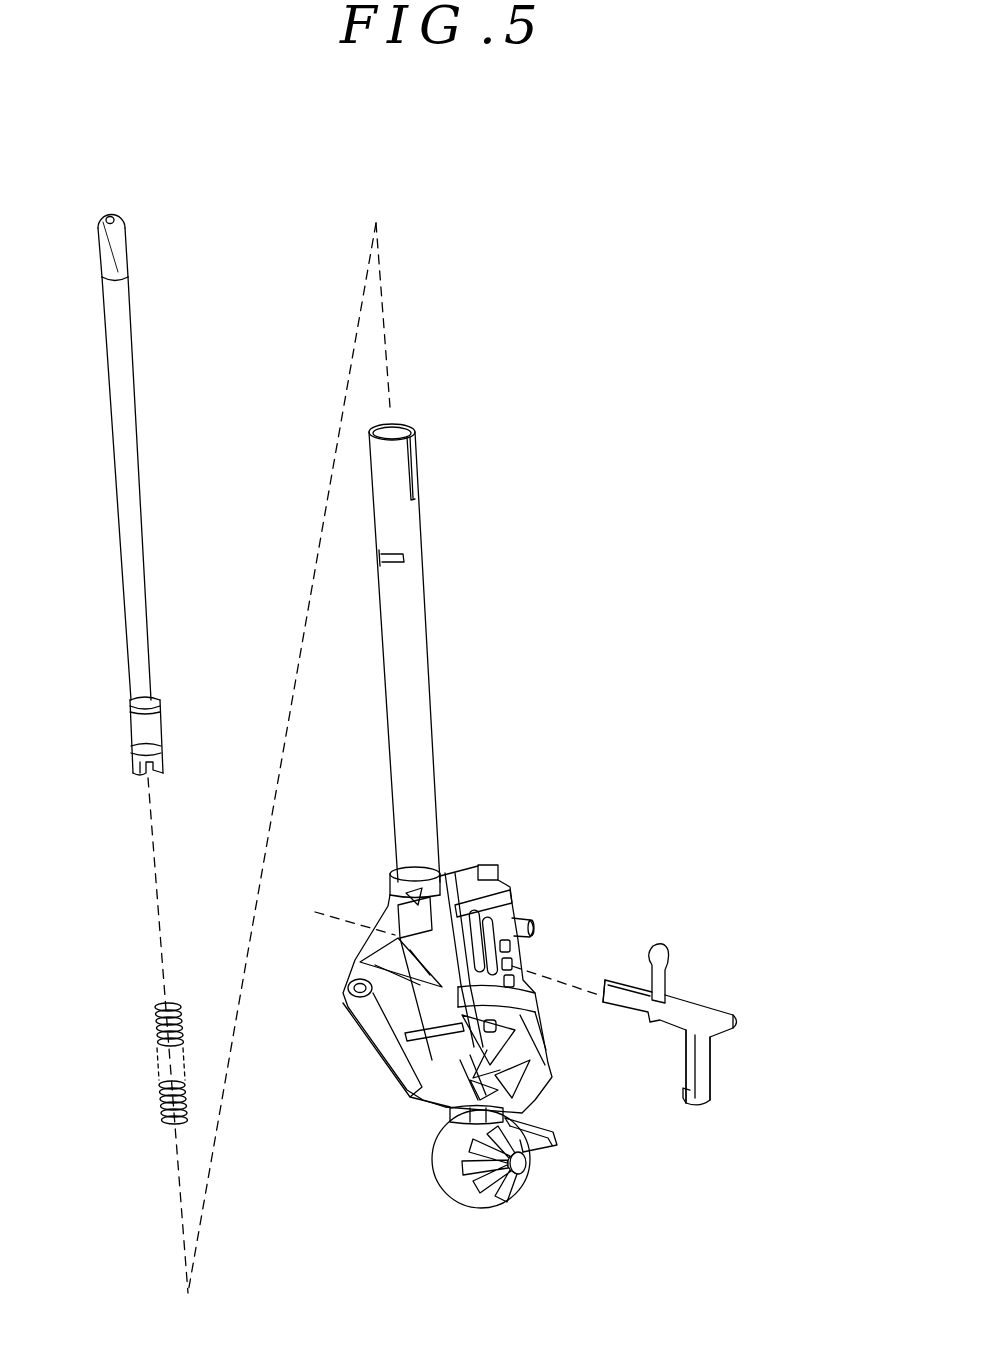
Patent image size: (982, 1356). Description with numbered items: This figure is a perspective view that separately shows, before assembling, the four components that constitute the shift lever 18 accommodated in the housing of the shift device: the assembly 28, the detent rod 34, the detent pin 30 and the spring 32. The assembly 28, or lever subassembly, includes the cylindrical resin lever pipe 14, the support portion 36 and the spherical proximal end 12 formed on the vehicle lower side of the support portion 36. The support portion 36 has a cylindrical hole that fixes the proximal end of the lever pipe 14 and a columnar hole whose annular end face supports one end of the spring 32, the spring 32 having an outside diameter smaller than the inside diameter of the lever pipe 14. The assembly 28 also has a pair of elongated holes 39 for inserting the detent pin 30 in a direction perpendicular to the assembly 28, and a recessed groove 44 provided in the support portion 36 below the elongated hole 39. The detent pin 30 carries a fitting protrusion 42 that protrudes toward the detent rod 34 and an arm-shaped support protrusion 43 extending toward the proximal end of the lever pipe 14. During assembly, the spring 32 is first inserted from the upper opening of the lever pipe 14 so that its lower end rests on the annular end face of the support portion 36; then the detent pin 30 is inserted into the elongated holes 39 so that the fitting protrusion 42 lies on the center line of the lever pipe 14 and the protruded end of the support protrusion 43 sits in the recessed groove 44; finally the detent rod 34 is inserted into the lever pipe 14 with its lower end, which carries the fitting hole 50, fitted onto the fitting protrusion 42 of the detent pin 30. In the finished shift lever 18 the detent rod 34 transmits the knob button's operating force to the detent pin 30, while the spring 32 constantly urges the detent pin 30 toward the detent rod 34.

The spherical proximal end 12 is at (450, 1177).
The lever pipe 14 is at (413, 633).
The shift lever 18 is at (680, 156).
The assembly 28 is at (568, 616).
The detent pin 30 is at (646, 1092).
The spring 32 is at (153, 1013).
The detent rod 34 is at (172, 218).
The support portion 36 is at (566, 904).
The elongated holes 39 is at (457, 898).
The fitting protrusion 42 is at (660, 983).
The support protrusion 43 is at (698, 1064).
The recessed groove 44 is at (487, 1034).
The fitting hole 50 is at (152, 726).